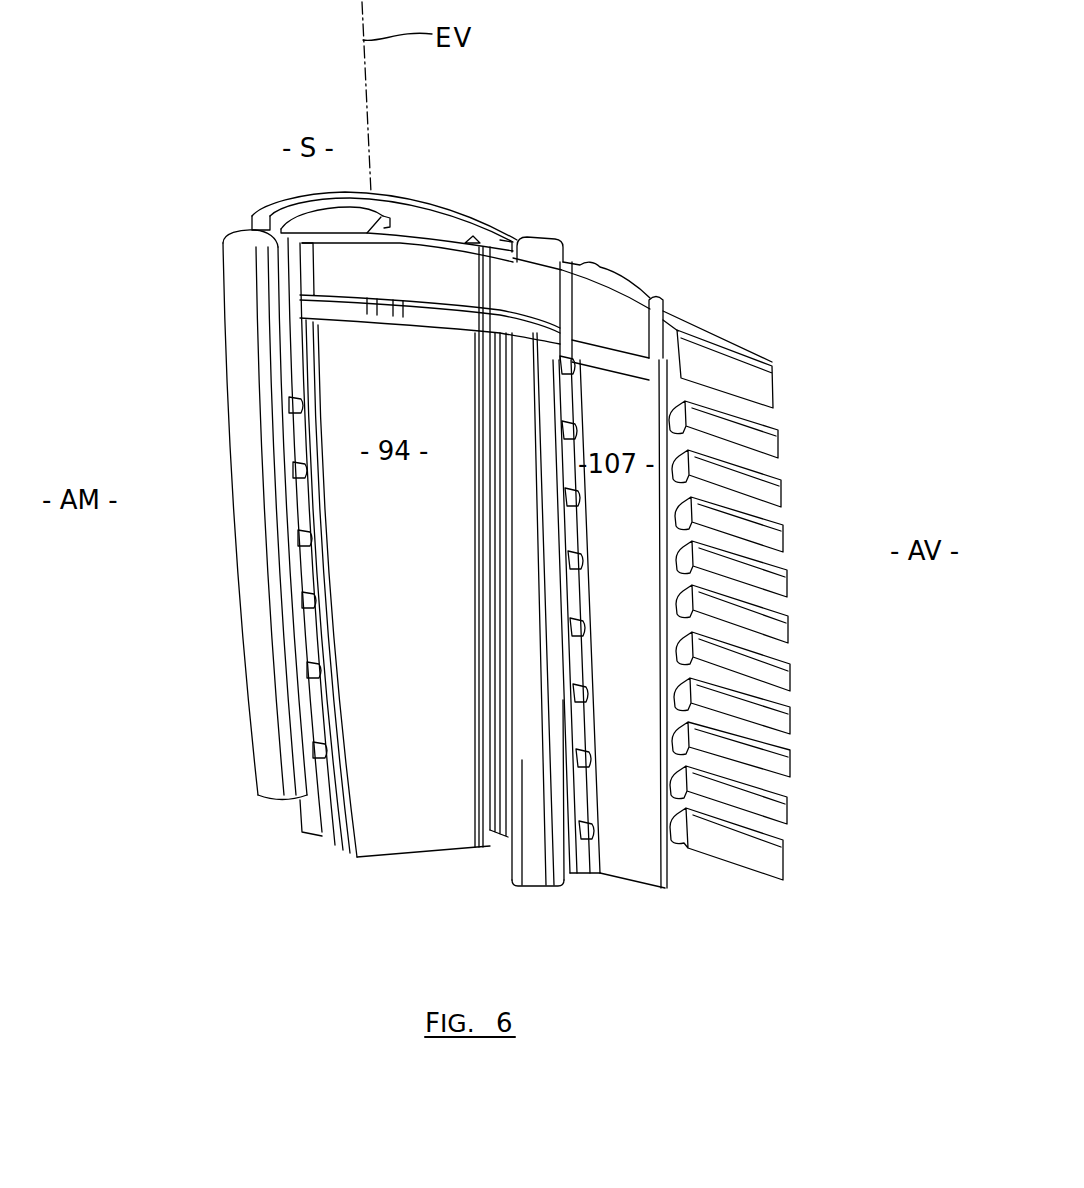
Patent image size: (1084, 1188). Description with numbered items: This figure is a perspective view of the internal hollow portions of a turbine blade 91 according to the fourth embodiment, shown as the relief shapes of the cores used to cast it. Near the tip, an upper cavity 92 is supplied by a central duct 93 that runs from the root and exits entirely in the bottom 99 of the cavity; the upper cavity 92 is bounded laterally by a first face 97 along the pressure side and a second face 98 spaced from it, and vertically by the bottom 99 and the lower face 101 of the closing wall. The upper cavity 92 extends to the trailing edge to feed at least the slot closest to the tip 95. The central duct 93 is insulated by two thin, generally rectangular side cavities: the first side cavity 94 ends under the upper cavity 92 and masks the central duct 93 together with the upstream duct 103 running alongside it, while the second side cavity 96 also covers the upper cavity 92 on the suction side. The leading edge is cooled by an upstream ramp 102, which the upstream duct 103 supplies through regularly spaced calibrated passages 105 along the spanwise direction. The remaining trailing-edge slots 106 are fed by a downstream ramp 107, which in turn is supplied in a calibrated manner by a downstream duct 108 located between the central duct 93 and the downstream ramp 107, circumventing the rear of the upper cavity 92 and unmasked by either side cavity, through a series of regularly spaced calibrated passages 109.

The blade 91 is at (167, 187).
The upper cavity 92 is at (433, 225).
The central duct 93 is at (433, 320).
The first side cavity 94 is at (395, 550).
The slot closest to the tip 95 is at (667, 313).
The second side cavity 96 is at (516, 335).
The first face 97 is at (608, 300).
The second face 98 is at (645, 290).
The bottom 99 is at (740, 413).
The lower face of the closing wall 101 is at (565, 262).
The upstream ramp 102 is at (237, 413).
The upstream duct 103 is at (332, 300).
The calibrated passages 105 is at (290, 543).
The slots of the trailing edge 106 is at (690, 548).
The downstream ramp 107 is at (576, 616).
The downstream duct 108 is at (537, 803).
The calibrated passages 109 is at (582, 620).